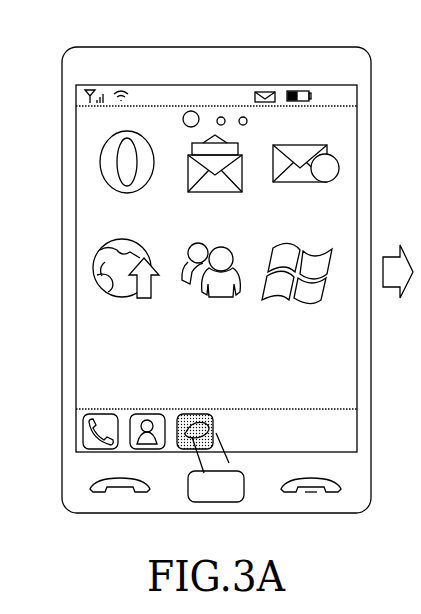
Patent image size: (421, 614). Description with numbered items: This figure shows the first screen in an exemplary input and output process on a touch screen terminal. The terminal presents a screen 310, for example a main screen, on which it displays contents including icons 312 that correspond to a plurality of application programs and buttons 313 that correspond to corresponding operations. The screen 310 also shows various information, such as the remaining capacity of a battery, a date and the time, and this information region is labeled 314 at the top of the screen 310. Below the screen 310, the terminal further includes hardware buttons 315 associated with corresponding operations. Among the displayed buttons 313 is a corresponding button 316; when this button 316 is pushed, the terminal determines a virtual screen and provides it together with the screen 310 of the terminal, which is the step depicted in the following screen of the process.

The screen 310 is at (228, 85).
The icons 312 is at (73, 409).
The buttons 313 is at (73, 411).
The status bar 314 is at (73, 86).
The hardware buttons 315 is at (73, 462).
The corresponding button 316 is at (178, 450).